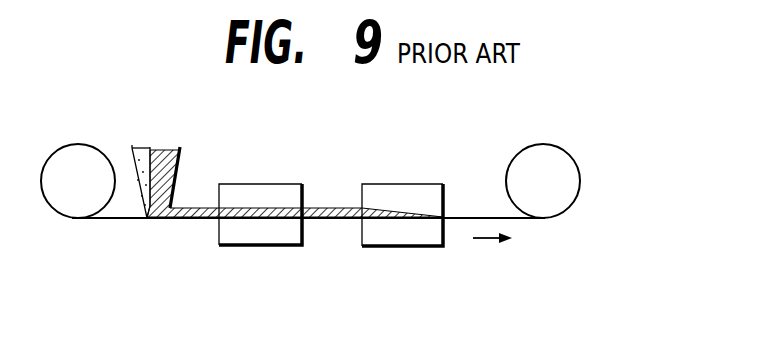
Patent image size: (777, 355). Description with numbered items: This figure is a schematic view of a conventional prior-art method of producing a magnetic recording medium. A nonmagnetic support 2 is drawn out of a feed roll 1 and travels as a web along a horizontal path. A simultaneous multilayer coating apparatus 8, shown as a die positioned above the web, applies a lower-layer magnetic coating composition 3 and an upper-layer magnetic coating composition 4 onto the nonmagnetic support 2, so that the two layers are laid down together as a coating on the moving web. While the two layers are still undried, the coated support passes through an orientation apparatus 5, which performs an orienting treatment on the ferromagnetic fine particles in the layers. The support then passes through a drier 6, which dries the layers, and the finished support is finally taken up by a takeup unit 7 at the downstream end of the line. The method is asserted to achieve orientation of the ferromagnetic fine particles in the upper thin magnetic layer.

The feed roll 1 is at (58, 146).
The nonmagnetic support 2 is at (105, 221).
The lower-layer magnetic coating composition 3 is at (141, 149).
The upper-layer magnetic coating composition 4 is at (165, 150).
The orientation apparatus 5 is at (265, 247).
The drier 6 is at (405, 248).
The takeup unit 7 is at (565, 147).
The simultaneous multilayer coating apparatus 8 is at (147, 222).